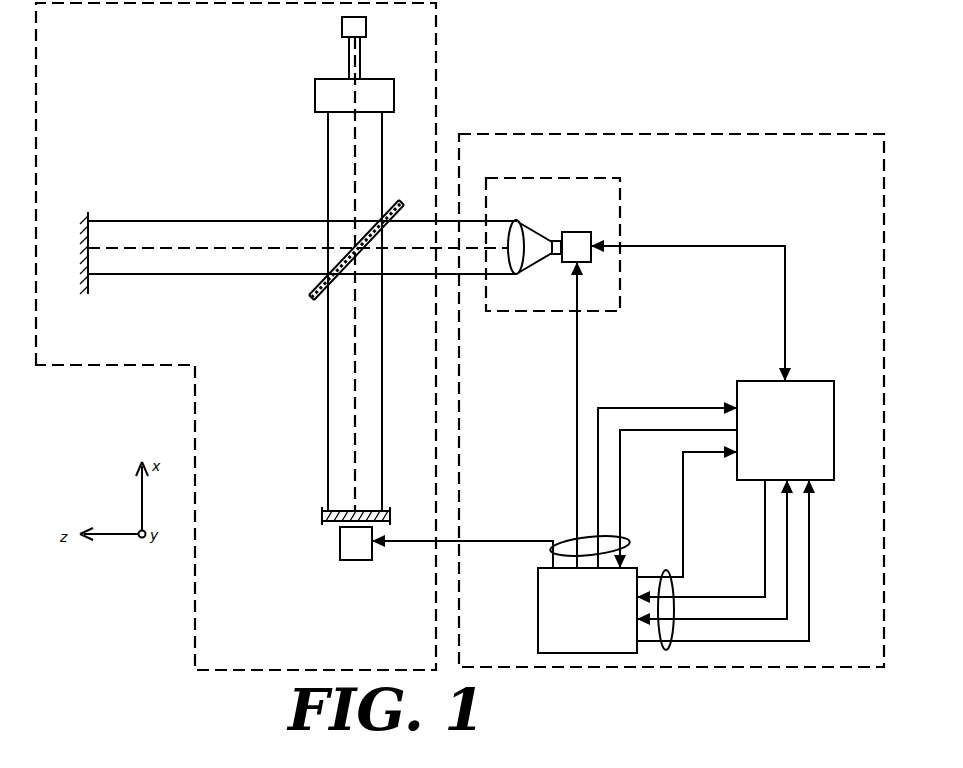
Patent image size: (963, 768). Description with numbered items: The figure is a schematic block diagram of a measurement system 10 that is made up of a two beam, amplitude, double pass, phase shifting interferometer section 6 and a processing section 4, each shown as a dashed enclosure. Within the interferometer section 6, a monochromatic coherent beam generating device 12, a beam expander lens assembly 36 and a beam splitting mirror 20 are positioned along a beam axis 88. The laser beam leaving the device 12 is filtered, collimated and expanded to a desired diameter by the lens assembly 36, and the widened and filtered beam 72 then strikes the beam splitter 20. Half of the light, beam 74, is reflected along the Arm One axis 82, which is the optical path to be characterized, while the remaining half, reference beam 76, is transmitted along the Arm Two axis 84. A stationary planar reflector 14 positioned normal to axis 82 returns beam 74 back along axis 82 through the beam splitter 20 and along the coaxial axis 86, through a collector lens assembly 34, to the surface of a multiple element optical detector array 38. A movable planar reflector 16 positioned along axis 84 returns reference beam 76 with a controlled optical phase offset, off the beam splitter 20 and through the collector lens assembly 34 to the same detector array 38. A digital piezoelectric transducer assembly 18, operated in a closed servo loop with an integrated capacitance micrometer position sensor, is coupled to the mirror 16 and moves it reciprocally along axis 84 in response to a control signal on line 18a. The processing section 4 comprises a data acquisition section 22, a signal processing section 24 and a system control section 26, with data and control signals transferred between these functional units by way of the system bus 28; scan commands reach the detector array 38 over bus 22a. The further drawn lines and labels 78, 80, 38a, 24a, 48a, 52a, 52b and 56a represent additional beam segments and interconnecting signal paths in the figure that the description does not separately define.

The measurement system 10 is at (702, 53).
The processing section 4 is at (800, 134).
The interferometer section 6 is at (84, 367).
The monochromatic coherent beam generating device 12 is at (366, 28).
The widened and filtered beam 72 is at (361, 58).
The beam expander lens assembly 36 is at (315, 93).
The beam axis 88 is at (355, 152).
The stationary planar reflector 14 is at (88, 214).
The reflected beam 74 is at (248, 221).
The Arm One axis 82 is at (170, 250).
The beam splitting mirror 20 is at (402, 202).
The reference beam 76 is at (328, 322).
The arm one end portion 78 is at (412, 278).
The coaxial axis 86 is at (430, 252).
The Arm Two axis 84 is at (328, 462).
The collector lens assembly 34 is at (512, 275).
The focusing cone 80 is at (528, 266).
The multiple element optical detector array 38 is at (570, 232).
The data acquisition section 22 is at (622, 178).
The detector control line 38a is at (785, 278).
The bus 22a is at (577, 356).
The signal processing section 24 is at (785, 430).
The processor input line 24a is at (640, 408).
The signal line 48a is at (683, 451).
The control line 18a is at (683, 510).
The system control section 26 is at (587, 610).
The system bus 28 is at (662, 570).
The control line 52a is at (765, 532).
The control line 52b is at (787, 523).
The control line 56a is at (809, 562).
The movable planar reflector 16 is at (322, 517).
The digital piezoelectric transducer assembly 18 is at (356, 543).